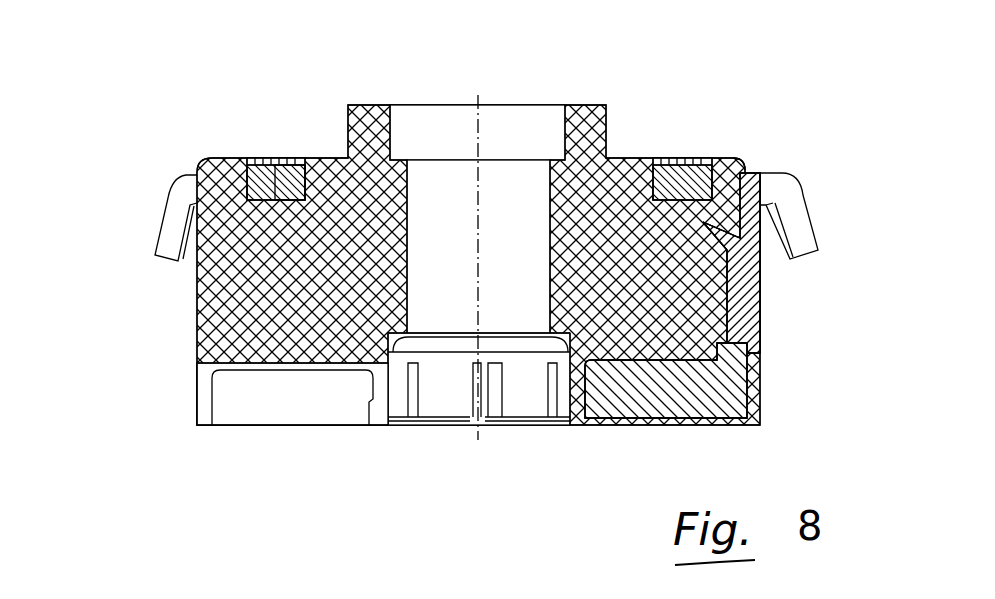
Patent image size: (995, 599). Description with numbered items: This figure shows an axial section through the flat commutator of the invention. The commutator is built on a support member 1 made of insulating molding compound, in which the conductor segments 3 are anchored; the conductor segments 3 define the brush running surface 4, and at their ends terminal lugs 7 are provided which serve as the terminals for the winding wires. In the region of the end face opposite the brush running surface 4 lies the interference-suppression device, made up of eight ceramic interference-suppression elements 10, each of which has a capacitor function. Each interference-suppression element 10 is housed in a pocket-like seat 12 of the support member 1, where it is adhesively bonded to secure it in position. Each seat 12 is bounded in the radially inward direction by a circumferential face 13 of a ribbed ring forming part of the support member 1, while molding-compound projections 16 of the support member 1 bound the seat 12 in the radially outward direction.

The support member 1 is at (258, 298).
The conductor segments 3 is at (760, 298).
The brush running surface 4 is at (636, 436).
The terminal lugs 7 is at (795, 227).
The interference-suppression elements 10 is at (687, 160).
The pocket-like seat 12 is at (270, 165).
The circumferential face 13 is at (286, 170).
The molding-compound projections 16 is at (742, 160).